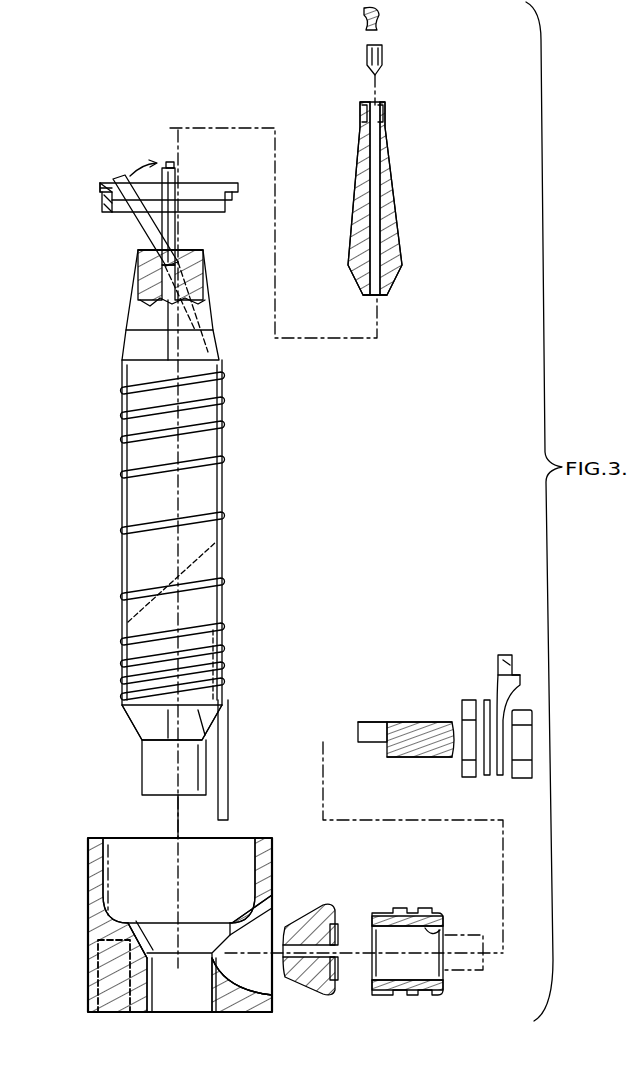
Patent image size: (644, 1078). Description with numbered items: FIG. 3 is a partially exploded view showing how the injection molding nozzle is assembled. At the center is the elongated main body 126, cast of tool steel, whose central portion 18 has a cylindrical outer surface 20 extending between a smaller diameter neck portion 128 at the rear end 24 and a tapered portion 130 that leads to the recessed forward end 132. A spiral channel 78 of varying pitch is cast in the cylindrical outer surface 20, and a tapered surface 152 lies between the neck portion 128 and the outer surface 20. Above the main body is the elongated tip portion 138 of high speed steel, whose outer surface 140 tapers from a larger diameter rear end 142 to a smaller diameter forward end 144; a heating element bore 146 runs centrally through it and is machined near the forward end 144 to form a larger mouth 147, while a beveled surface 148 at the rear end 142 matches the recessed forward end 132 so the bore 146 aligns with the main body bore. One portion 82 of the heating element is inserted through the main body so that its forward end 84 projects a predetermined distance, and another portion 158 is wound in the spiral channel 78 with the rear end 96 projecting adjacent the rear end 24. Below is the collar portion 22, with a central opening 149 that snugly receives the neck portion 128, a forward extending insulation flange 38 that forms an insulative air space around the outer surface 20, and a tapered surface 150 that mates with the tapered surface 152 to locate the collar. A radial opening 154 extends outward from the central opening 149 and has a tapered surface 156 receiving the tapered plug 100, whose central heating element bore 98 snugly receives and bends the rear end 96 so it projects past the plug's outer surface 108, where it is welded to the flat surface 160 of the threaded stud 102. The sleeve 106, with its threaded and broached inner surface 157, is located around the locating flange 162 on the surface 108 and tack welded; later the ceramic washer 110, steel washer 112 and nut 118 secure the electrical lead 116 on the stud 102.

The central portion 18 is at (199, 550).
The cylindrical outer surface 20 is at (225, 545).
The collar portion 22 is at (152, 925).
The rear end 24 is at (150, 795).
The insulation flange 38 is at (88, 852).
The spiral channel 78 is at (222, 462).
The portion of the heating element 82 is at (178, 230).
The forward end of the heating element 84 is at (176, 163).
The rear end of the heating element 96 is at (228, 822).
The central heating element bore 98 is at (340, 980).
The tapered plug 100 is at (318, 905).
The threaded stud 102 is at (400, 756).
The sleeve 106 is at (385, 912).
The outer surface of the plug 108 is at (298, 908).
The ceramic washer 110 is at (463, 700).
The steel washer 112 is at (485, 700).
The electrical lead 116 is at (507, 655).
The nut 118 is at (520, 765).
The main body 126 is at (228, 590).
The neck portion 128 is at (142, 778).
The tapered portion 130 is at (210, 302).
The recessed forward end 132 is at (195, 248).
The tip portion 138 is at (396, 252).
The outer surface of the tip portion 140 is at (384, 173).
The rear end of the tip portion 142 is at (386, 298).
The forward end of the tip portion 144 is at (385, 103).
The heating element bore 146 is at (377, 178).
The mouth 147 is at (360, 103).
The beveled surface 148 is at (396, 292).
The central opening 149 is at (165, 1012).
The tapered surface of the collar portion 150 is at (133, 920).
The tapered surface of the main body 152 is at (128, 722).
The radial opening 154 is at (302, 988).
The tapered surface of the radial opening 156 is at (258, 990).
The inner surface of the sleeve 157 is at (438, 932).
The portion of the heating element 158 is at (215, 625).
The flat surface of the threaded stud 160 is at (370, 745).
The locating flange 162 is at (342, 972).